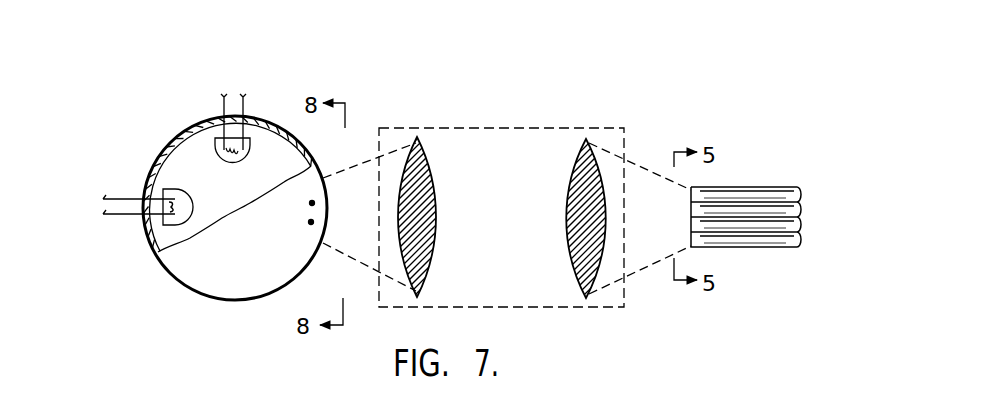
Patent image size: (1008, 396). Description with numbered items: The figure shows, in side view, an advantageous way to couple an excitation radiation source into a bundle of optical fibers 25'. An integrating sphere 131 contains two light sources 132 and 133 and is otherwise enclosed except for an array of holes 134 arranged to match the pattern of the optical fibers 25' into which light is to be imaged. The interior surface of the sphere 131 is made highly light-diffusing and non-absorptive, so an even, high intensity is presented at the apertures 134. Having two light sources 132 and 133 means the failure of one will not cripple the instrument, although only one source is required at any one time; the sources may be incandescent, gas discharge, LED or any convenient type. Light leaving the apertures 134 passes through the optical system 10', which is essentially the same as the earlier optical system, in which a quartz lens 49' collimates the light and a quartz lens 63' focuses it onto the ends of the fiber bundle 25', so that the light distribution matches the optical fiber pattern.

The integrating sphere 131 is at (174, 137).
The light source 132 is at (178, 191).
The light source 133 is at (250, 142).
The array of holes 134 is at (318, 203).
The quartz lens 49' is at (415, 193).
The optical system 10' is at (501, 197).
The quartz lens 63' is at (583, 193).
The optical fiber bundle 25' is at (746, 239).